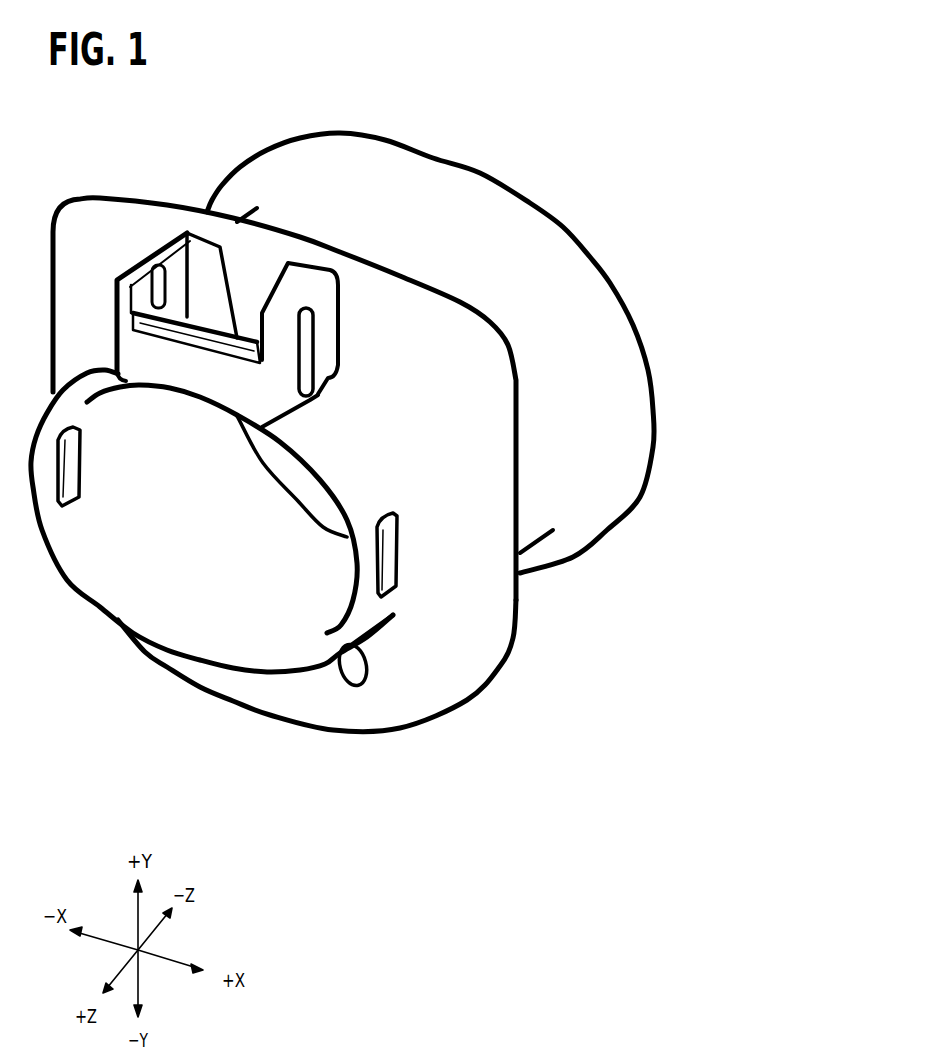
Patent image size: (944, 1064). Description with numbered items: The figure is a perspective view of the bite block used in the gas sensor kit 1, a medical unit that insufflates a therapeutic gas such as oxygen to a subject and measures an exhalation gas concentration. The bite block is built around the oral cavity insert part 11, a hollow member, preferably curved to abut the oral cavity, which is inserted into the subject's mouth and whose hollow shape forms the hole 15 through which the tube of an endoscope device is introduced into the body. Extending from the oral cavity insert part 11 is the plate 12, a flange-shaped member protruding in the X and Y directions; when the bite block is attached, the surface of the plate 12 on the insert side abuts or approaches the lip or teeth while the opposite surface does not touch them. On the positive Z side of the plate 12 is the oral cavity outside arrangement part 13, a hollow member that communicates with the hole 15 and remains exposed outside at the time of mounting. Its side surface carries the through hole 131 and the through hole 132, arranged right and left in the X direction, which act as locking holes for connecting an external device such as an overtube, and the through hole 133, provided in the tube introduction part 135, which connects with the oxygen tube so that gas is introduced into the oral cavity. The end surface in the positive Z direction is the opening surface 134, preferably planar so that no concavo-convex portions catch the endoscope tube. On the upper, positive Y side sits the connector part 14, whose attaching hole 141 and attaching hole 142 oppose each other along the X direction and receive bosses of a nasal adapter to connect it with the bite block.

The gas sensor kit 1 is at (476, 108).
The oral cavity insert part 11 is at (583, 527).
The plate 12 is at (493, 353).
The oral cavity outside arrangement part 13 is at (113, 563).
The through hole 131 is at (67, 507).
The through hole 132 is at (385, 595).
The through hole 133 is at (360, 685).
The opening surface 134 is at (151, 633).
The tube introduction part 135 is at (330, 690).
The connector part 14 is at (364, 255).
The attaching hole 141 is at (146, 250).
The attaching hole 142 is at (310, 365).
The hole 15 is at (327, 495).